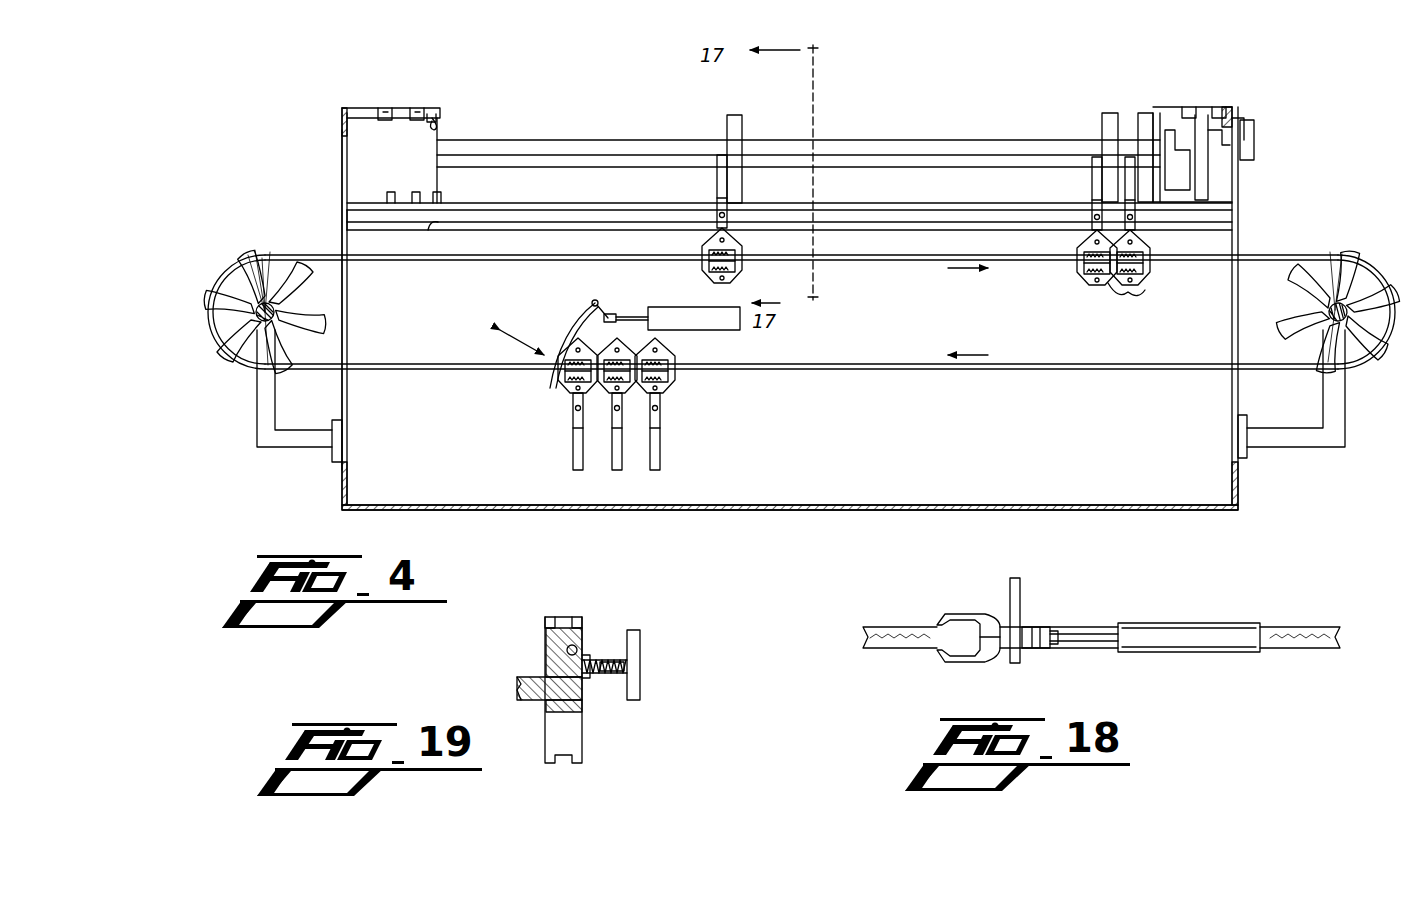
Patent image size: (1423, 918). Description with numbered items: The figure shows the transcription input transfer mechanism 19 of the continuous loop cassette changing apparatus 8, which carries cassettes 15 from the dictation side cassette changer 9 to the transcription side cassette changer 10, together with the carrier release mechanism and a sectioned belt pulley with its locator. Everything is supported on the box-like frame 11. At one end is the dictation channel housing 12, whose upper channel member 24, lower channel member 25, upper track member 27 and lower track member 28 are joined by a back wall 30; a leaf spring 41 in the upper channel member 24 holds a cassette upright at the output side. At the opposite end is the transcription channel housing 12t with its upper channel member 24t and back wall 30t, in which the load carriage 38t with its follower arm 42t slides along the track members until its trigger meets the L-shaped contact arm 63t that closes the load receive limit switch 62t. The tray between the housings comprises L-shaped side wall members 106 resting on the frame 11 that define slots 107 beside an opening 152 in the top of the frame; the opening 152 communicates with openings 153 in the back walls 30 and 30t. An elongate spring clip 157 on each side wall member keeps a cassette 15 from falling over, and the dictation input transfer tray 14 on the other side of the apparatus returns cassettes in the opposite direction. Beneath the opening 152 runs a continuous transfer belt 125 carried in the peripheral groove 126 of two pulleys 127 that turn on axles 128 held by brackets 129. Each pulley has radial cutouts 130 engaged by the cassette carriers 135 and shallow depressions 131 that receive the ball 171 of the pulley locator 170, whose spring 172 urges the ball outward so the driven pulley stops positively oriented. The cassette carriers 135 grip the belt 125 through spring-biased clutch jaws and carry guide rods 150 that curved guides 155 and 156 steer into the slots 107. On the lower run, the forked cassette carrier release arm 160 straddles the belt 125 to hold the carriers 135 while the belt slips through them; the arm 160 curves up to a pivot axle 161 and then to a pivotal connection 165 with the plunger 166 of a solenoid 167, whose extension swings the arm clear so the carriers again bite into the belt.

In FIG. 4, the continuous loop cassette changing apparatus 8 is at (570, 124).
In FIG. 4, the dictation side cassette changer 9 is at (342, 102).
In FIG. 4, the transcription side cassette changer 10 is at (1234, 104).
In FIG. 4, the frame 11 is at (538, 223).
In FIG. 4, the channel housing 12 is at (440, 114).
In FIG. 4, the dictation input transfer tray 14 is at (930, 134).
In FIG. 4, the cassette 15 is at (742, 126).
In FIG. 4, the transcription input transfer mechanism 19 is at (228, 224).
In FIG. 4, the upper channel member 24 is at (422, 106).
In FIG. 4, the lower channel member 25 is at (420, 196).
In FIG. 4, the upper track member 27 is at (380, 106).
In FIG. 4, the lower track member 28 is at (388, 196).
In FIG. 4, the back wall 30 is at (342, 120).
In FIG. 4, the leaf spring 41 is at (440, 120).
In FIG. 4, the side wall members 106 is at (900, 183).
In FIG. 4, the slots 107 is at (880, 226).
In FIG. 4, the transfer belt 125 is at (862, 372).
In FIG. 18, the transfer belt 125 is at (900, 628).
In FIG. 19, the peripheral groove 126 is at (558, 618).
In FIG. 4, the pulley 127 is at (262, 268).
In FIG. 19, the pulley 127 is at (545, 636).
In FIG. 4, the axle 128 is at (262, 300).
In FIG. 19, the axle 128 is at (536, 698).
In FIG. 4, the bracket 129 is at (295, 448).
In FIG. 19, the bracket 129 is at (640, 648).
In FIG. 4, the radial cutouts 130 is at (236, 330).
In FIG. 19, the radial cutouts 130 is at (560, 736).
In FIG. 19, the shallow depressions 131 is at (582, 640).
In FIG. 4, the cassette carrier 135 is at (740, 272).
In FIG. 4, the guide rods 150 is at (716, 205).
In FIG. 4, the opening 152 is at (1180, 212).
In FIG. 4, the openings 153 is at (345, 162).
In FIG. 4, the curved guides 155 is at (440, 232).
In FIG. 4, the curved guides 156 is at (346, 210).
In FIG. 4, the spring clip 157 is at (612, 160).
In FIG. 4, the cassette carrier release arm 160 is at (562, 338).
In FIG. 18, the cassette carrier release arm 160 is at (966, 614).
In FIG. 4, the pivot axle 161 is at (594, 298).
In FIG. 18, the pivot axle 161 is at (1022, 600).
In FIG. 4, the pivotal connection 165 is at (614, 312).
In FIG. 18, the pivotal connection 165 is at (1058, 628).
In FIG. 4, the plunger 166 is at (636, 312).
In FIG. 18, the plunger 166 is at (1096, 648).
In FIG. 4, the solenoid 167 is at (688, 332).
In FIG. 18, the solenoid 167 is at (1190, 622).
In FIG. 19, the pulley locator 170 is at (608, 676).
In FIG. 19, the ball 171 is at (588, 680).
In FIG. 19, the spring 172 is at (612, 662).
In FIG. 4, the transcription channel housing 12t is at (1199, 110).
In FIG. 4, the upper channel member 24t is at (1150, 110).
In FIG. 4, the back wall 30t is at (1240, 108).
In FIG. 4, the load carriage 38t is at (1218, 108).
In FIG. 4, the follower arm 42t is at (1180, 128).
In FIG. 4, the load receive limit switch 62t is at (1256, 134).
In FIG. 4, the contact arm 63t is at (1244, 120).